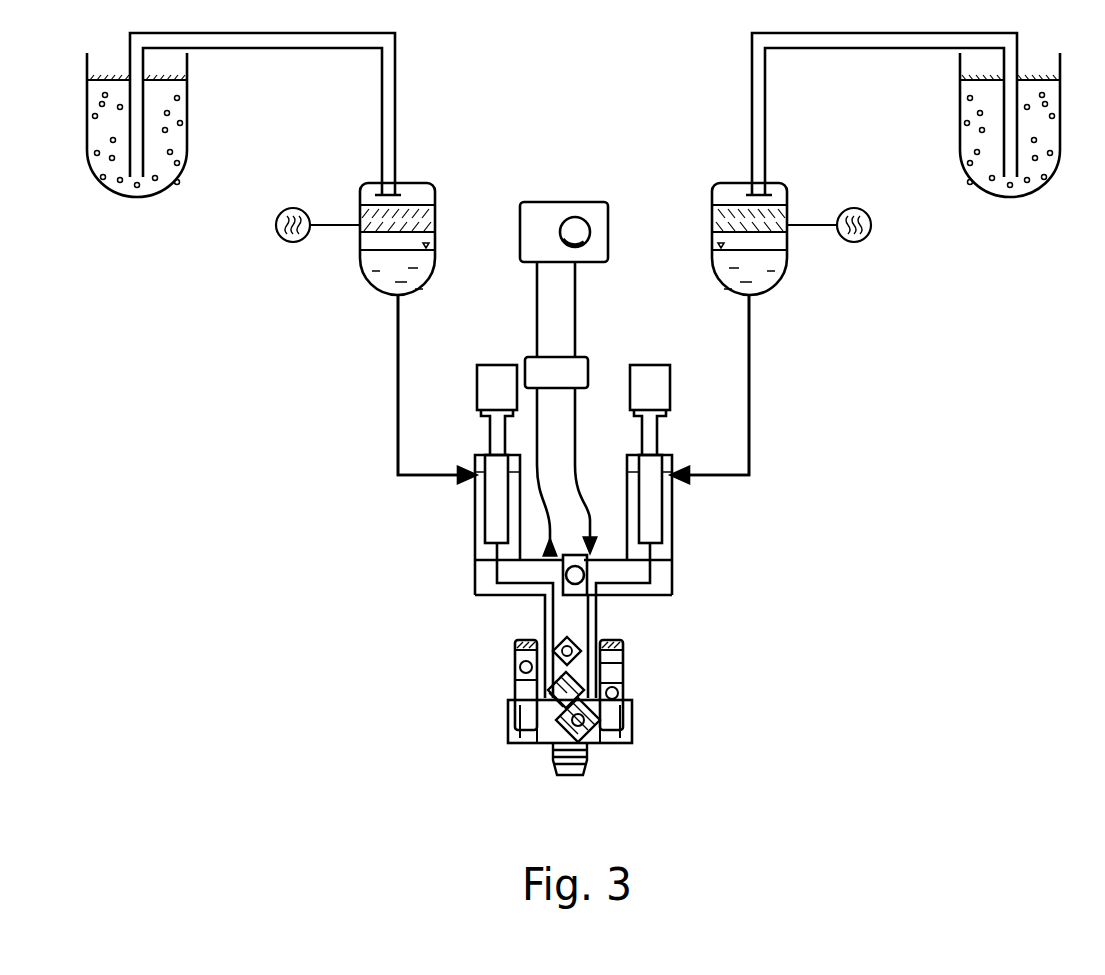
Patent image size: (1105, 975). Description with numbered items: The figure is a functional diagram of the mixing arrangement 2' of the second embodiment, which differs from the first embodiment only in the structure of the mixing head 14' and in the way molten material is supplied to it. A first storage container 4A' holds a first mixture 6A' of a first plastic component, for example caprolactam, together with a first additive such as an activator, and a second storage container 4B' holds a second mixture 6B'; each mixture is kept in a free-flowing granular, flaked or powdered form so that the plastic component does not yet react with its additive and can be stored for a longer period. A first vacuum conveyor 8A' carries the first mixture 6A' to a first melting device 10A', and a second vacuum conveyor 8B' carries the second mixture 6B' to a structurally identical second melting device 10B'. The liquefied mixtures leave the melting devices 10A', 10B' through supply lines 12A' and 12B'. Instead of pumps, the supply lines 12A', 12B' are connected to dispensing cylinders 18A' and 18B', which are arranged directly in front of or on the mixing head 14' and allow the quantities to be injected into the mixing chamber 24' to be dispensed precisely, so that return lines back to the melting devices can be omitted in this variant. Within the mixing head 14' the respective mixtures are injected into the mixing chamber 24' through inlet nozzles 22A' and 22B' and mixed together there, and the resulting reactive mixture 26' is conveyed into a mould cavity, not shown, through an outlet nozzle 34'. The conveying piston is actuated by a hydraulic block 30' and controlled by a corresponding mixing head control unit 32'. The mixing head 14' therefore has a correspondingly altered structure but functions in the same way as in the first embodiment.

The mixing arrangement 2' is at (575, 405).
The first storage container 4A' is at (194, 125).
The second storage container 4B' is at (957, 125).
The first mixture 6A' is at (196, 139).
The second mixture 6B' is at (956, 139).
The first vacuum conveyor 8A' is at (317, 114).
The second vacuum conveyor 8B' is at (834, 114).
The first melting device 10A' is at (411, 315).
The second melting device 10B' is at (750, 315).
The first supply line 12A' is at (369, 385).
The second supply line 12B' is at (786, 385).
The mixing head 14' is at (580, 721).
The first dispensing cylinder 18A' is at (505, 496).
The second dispensing cylinder 18B' is at (658, 497).
The first inlet nozzle 22A' is at (480, 685).
The second inlet nozzle 22B' is at (660, 693).
The mixing chamber 24' is at (529, 761).
The reactive mixture 26' is at (541, 752).
The hydraulic block 30' is at (612, 232).
The mixing head control unit 32' is at (583, 409).
The outlet nozzle 34' is at (589, 802).